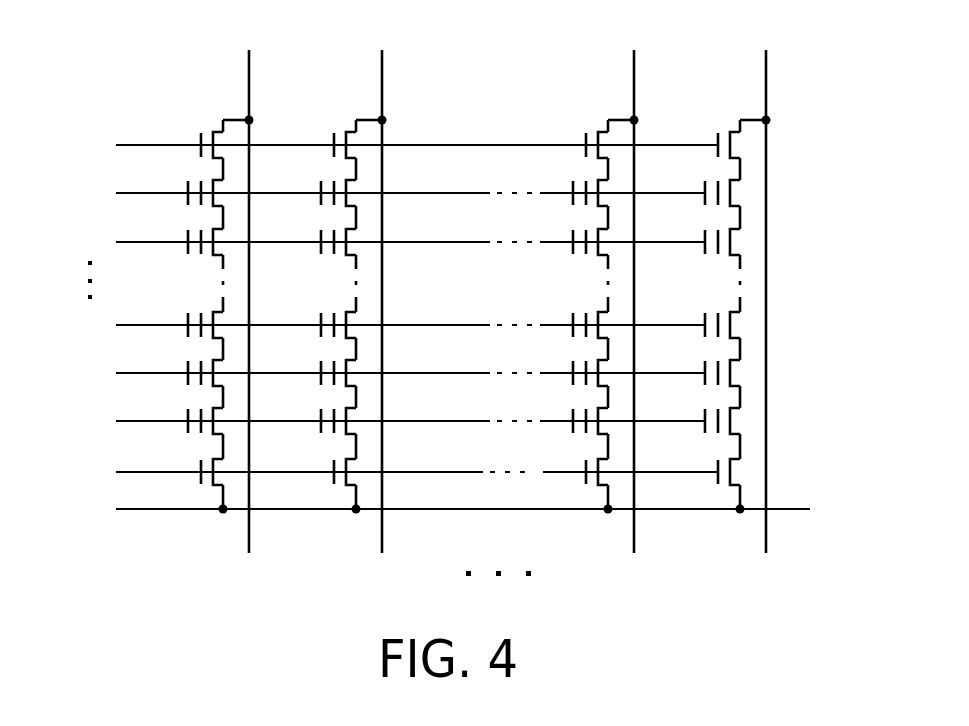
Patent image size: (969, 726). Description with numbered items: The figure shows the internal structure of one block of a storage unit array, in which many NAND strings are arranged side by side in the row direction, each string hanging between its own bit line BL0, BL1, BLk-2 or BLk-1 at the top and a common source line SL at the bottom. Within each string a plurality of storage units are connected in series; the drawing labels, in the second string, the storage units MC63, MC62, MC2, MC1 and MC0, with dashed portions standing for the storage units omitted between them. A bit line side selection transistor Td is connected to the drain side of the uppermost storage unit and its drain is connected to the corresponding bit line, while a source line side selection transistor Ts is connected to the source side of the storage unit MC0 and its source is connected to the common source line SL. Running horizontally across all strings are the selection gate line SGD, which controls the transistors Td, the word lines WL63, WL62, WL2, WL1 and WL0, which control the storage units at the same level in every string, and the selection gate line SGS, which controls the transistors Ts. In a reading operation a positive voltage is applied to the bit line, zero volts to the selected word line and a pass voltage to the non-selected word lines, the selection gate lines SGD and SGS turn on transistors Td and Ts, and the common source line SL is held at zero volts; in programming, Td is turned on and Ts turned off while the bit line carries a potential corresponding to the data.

The bit line side selection transistor Td is at (358, 148).
The storage unit MC63 is at (358, 196).
The storage unit MC62 is at (358, 245).
The storage unit MC2 is at (358, 328).
The storage unit MC1 is at (358, 376).
The storage unit MC0 is at (358, 424).
The source line side selection transistor Ts is at (358, 475).
The selection gate line SGD is at (387, 145).
The word line WL63 is at (374, 193).
The word line WL62 is at (374, 242).
The word line WL2 is at (379, 326).
The word line WL1 is at (379, 374).
The word line WL0 is at (379, 422).
The selection gate line SGS is at (385, 471).
The common source line SL is at (439, 508).
The bit line BL0 is at (246, 321).
The bit line BL1 is at (378, 321).
The bit line BLk-2 is at (627, 321).
The bit line BLk-1 is at (767, 321).